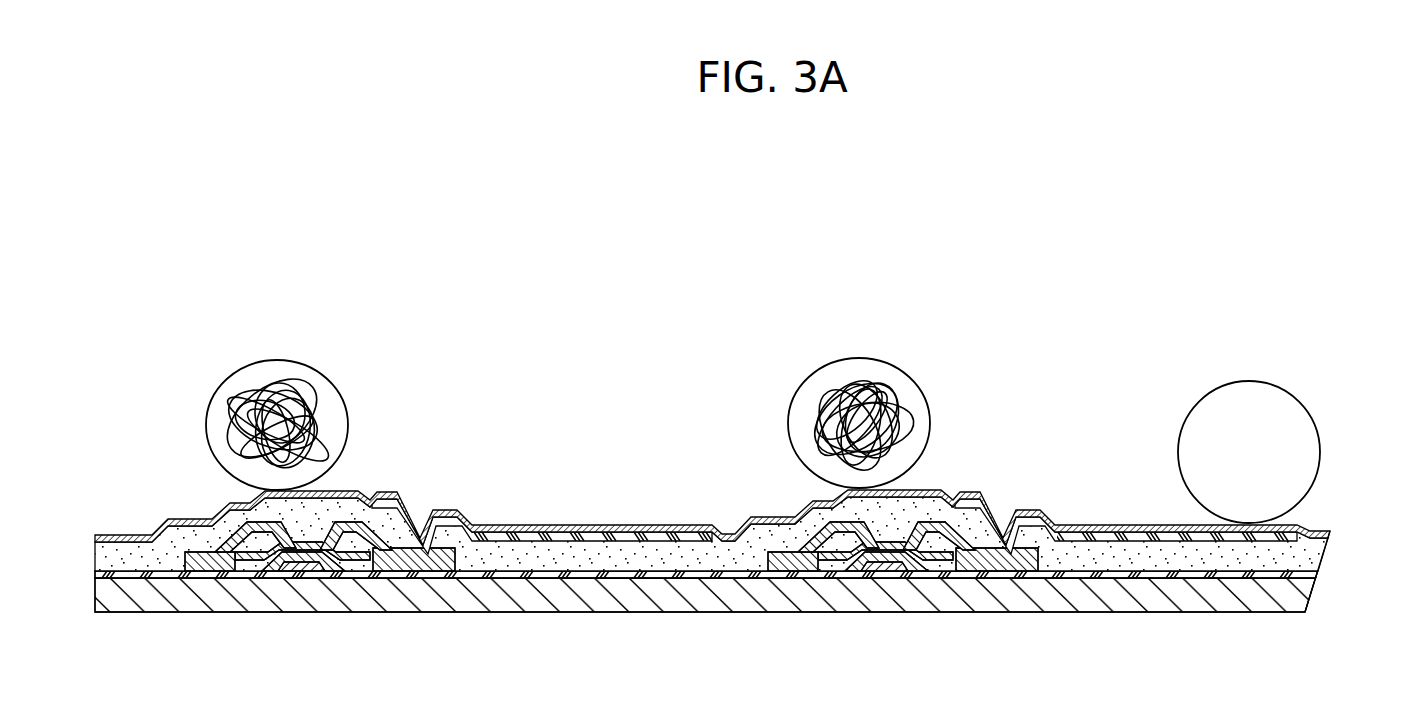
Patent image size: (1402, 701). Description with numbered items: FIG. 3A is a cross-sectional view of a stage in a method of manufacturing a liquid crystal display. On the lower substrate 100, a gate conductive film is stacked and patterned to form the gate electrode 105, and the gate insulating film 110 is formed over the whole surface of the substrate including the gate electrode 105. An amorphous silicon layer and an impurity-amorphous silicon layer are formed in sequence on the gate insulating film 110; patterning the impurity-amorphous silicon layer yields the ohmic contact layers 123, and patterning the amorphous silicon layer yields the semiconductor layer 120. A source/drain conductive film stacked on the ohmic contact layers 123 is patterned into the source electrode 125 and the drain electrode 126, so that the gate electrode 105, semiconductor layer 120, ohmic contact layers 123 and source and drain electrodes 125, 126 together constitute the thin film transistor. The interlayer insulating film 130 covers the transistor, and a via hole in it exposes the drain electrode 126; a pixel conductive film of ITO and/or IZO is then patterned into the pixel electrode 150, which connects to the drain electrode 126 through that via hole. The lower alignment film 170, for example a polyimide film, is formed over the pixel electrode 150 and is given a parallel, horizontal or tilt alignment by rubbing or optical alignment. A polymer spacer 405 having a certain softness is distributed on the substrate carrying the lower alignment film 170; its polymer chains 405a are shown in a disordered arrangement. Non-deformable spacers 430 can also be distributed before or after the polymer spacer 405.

The lower substrate 100 is at (1320, 596).
The gate insulating film 110 is at (1318, 572).
The gate electrode 105 is at (900, 574).
The semiconductor layer 120 is at (850, 578).
The ohmic contact layers 123 is at (836, 560).
The source electrode 125 is at (803, 558).
The drain electrode 126 is at (1012, 560).
The interlayer insulating film 130 is at (1322, 552).
The pixel electrode 150 is at (1322, 536).
The lower alignment film 170 is at (1330, 524).
The polymer spacer 405 is at (862, 360).
The polymer chains 405a is at (912, 398).
The non-deformable spacers 430 is at (1246, 392).